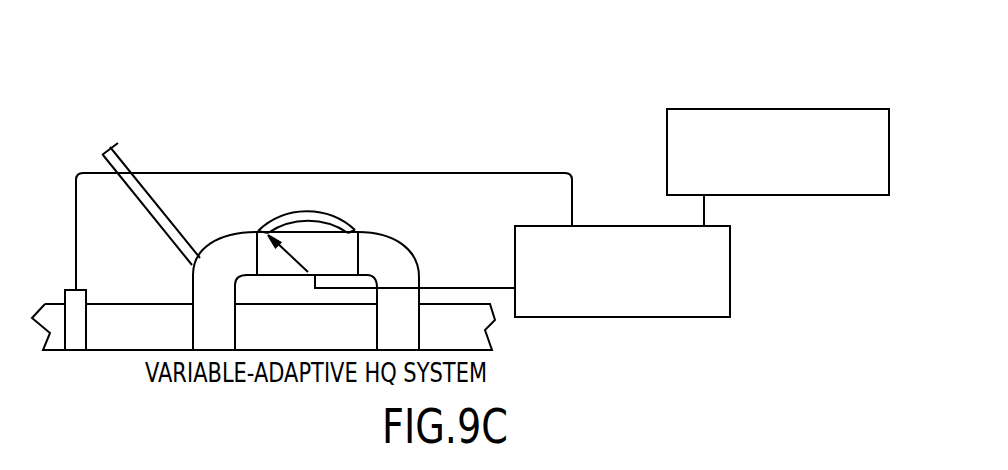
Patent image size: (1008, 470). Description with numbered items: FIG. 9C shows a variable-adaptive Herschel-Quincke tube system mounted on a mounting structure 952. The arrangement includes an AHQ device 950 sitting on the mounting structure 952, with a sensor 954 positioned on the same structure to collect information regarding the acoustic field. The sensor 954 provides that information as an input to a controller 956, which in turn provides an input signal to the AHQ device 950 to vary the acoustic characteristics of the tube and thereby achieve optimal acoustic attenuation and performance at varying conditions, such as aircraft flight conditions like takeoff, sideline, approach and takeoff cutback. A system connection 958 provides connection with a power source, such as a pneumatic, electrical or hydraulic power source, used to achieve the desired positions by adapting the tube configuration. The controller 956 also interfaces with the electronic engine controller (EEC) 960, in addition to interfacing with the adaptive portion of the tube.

The AHQ device 950 is at (380, 232).
The mounting structure 952 is at (492, 345).
The sensor 954 is at (86, 340).
The controller 956 is at (730, 288).
The system connection 958 is at (109, 147).
The electronic engine controller (EEC) 960 is at (773, 108).